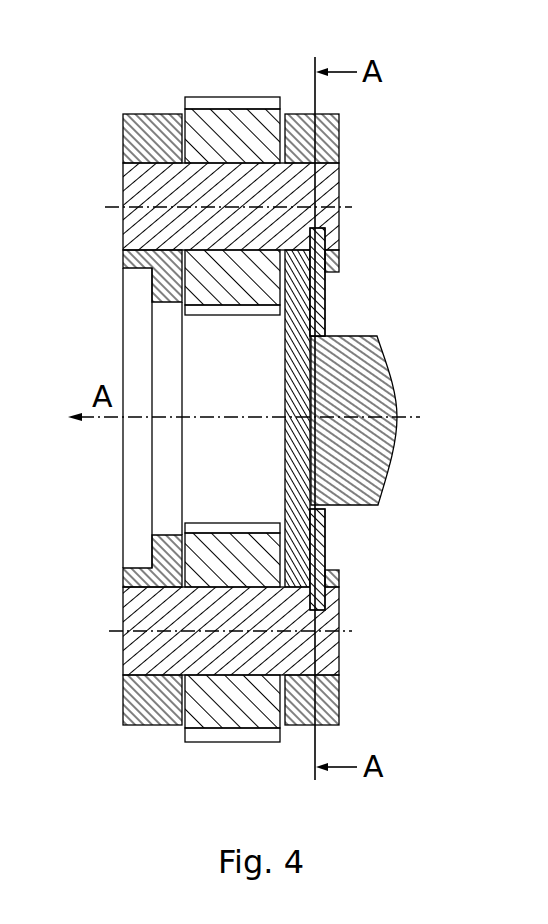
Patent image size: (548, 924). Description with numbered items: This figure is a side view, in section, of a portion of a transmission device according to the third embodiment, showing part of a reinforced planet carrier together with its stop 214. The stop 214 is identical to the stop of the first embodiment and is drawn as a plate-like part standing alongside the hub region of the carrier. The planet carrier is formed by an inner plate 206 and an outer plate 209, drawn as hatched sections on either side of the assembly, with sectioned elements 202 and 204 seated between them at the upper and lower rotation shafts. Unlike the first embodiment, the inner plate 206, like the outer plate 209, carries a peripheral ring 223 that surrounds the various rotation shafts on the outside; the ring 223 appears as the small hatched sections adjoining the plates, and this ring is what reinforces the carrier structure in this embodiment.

The upper laminated element 202 is at (230, 148).
The lower laminated element 204 is at (231, 710).
The inner plate 206 is at (300, 132).
The outer plate 209 is at (150, 132).
The stop 214 is at (320, 548).
The peripheral ring 223 is at (332, 128).